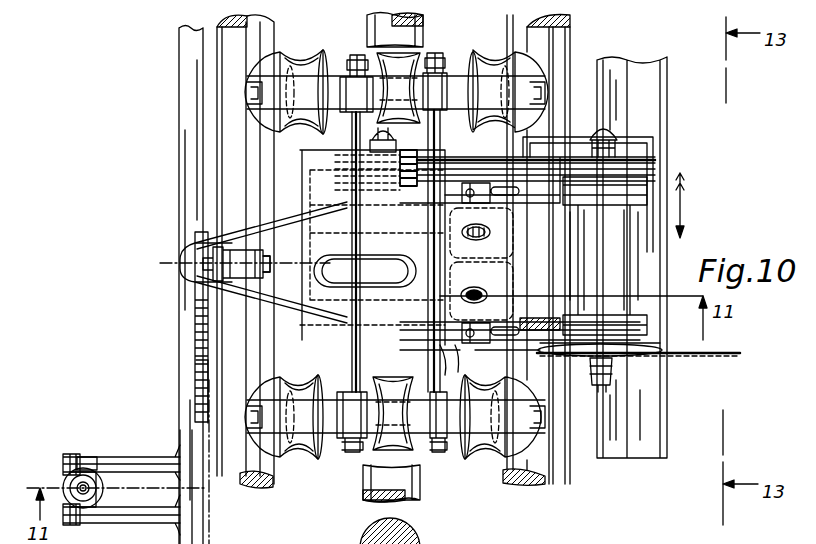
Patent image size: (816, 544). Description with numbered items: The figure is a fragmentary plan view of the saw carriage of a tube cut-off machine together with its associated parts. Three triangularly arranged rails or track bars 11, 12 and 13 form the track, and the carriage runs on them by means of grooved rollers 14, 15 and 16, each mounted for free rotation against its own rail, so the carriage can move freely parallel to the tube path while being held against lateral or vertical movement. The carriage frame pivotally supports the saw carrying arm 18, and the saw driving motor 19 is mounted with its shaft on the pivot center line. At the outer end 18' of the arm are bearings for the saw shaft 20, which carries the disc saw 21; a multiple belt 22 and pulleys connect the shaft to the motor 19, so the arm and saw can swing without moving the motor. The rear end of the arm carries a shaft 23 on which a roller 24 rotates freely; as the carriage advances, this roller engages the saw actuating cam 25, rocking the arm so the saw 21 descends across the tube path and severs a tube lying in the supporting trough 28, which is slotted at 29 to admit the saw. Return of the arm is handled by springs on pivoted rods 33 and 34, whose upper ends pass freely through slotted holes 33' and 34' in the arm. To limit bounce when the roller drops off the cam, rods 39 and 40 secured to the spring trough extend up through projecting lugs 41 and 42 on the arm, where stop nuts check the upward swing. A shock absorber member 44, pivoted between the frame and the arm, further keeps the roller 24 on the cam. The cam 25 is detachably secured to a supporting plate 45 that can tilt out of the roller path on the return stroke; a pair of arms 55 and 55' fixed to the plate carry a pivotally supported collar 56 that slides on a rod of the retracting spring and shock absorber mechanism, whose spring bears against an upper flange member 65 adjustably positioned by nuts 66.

The track bar 11 is at (425, 24).
The track bar 12 is at (252, 160).
The track bar 13 is at (233, 460).
The roller 14 is at (418, 58).
The roller 15 is at (490, 52).
The roller 16 is at (295, 57).
The saw carrying arm 18 is at (372, 236).
The outer end of arm 18' is at (602, 256).
The saw driving motor 19 is at (452, 360).
The saw shaft 20 is at (612, 375).
The disc saw 21 is at (690, 356).
The multiple belt 22 is at (556, 192).
The shaft 23 is at (205, 262).
The roller 24 is at (192, 297).
The saw actuating cam 25 is at (196, 322).
The supporting trough 28 is at (642, 100).
The slot 29 is at (595, 346).
The pivoted rod 33 is at (481, 291).
The slotted hole 33' is at (489, 303).
The pivoted rod 34 is at (481, 237).
The slotted hole 34' is at (487, 223).
The rod 39 is at (495, 336).
The rod 40 is at (492, 178).
The projecting lug 41 is at (468, 346).
The projecting lug 42 is at (459, 182).
The shock absorber member 44 is at (266, 275).
The supporting plate 45 is at (192, 372).
The arm 55 is at (121, 519).
The arm 55' is at (121, 453).
The collar 56 is at (66, 478).
The upper flange member 65 is at (90, 475).
The nuts 66 is at (88, 500).